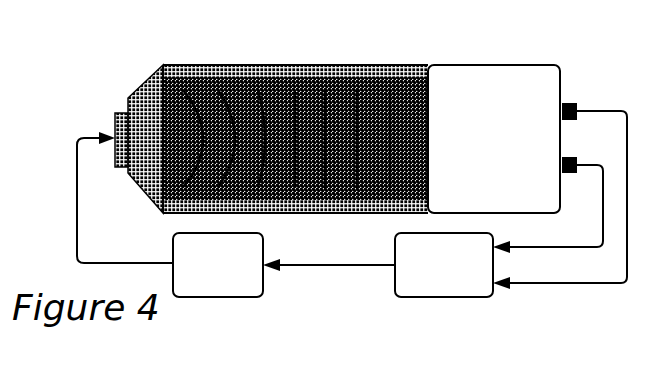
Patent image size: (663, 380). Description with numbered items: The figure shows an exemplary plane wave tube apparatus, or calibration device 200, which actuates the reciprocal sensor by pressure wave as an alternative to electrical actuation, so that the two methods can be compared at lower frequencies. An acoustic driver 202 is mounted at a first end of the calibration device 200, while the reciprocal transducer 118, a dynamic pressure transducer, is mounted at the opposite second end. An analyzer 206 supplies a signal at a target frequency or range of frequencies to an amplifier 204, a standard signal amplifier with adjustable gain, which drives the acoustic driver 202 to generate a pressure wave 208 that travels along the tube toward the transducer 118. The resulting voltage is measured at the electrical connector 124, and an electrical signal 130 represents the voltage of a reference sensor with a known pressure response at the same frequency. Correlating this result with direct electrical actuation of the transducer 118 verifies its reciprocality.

The reciprocal transducer 118 is at (494, 139).
The electrical connector 124 is at (574, 158).
The electrical signal 130 is at (571, 104).
The plane wave tube apparatus 200 is at (358, 200).
The acoustic driver 202 is at (145, 174).
The amplifier 204 is at (240, 297).
The analyzer 206 is at (441, 297).
The pressure wave 208 is at (295, 92).